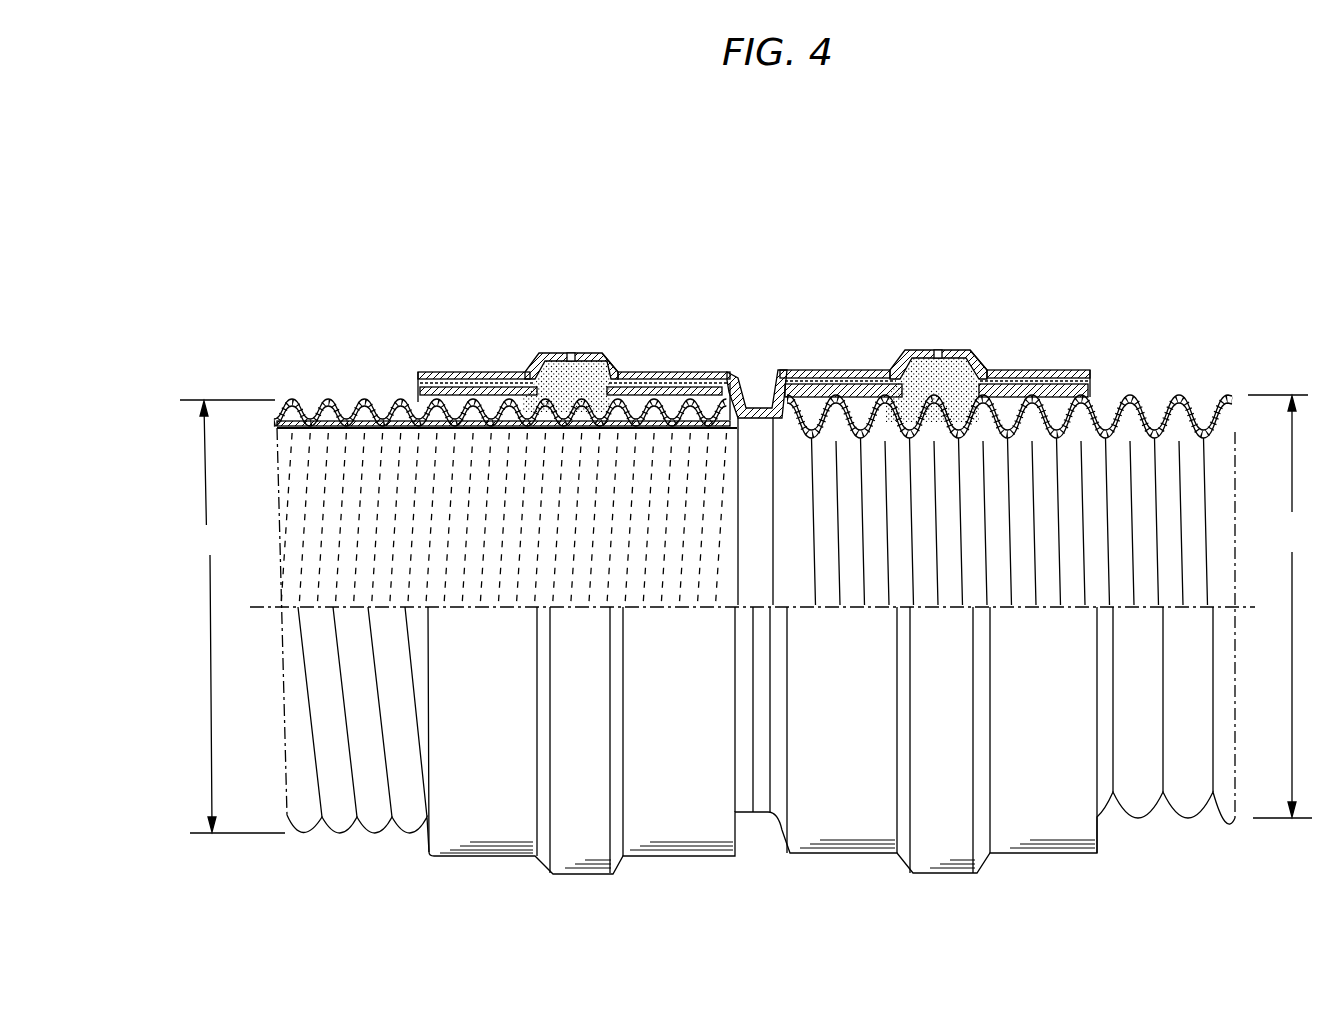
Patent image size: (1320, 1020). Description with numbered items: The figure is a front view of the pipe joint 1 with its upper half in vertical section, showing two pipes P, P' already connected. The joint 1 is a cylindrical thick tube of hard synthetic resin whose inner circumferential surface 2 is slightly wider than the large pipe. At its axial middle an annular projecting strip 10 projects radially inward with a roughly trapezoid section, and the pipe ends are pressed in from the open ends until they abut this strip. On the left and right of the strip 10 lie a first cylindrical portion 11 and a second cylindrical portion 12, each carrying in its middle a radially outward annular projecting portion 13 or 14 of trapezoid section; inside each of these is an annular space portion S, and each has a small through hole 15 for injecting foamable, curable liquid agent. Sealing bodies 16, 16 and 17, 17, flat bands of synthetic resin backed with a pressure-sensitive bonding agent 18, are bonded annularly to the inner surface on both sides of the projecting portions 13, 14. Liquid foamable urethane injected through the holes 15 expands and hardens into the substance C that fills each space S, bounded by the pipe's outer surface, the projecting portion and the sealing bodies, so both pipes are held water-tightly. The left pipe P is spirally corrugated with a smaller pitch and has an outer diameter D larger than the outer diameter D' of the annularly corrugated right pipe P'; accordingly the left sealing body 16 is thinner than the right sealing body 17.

The pipe joint 1 is at (1087, 337).
The inner circumferential surface 2 is at (1095, 372).
The annular projecting strip 10 is at (752, 408).
The first cylindrical portion 11 is at (660, 372).
The second cylindrical portion 12 is at (811, 372).
The annular projecting portion 13 is at (557, 357).
The annular projecting portion 14 is at (919, 350).
The through hole 15 is at (573, 353).
The sealing body 16 is at (445, 390).
The sealing body 17 is at (847, 384).
The pressure-sensitive bonding agent 18 is at (485, 382).
The pipe P is at (505, 555).
The pipe P' is at (1020, 550).
The foamed and hardened urethane substance C is at (537, 362).
The annular space portion S is at (602, 355).
The outer diameter D is at (232, 616).
The outer diameter D' is at (1280, 606).